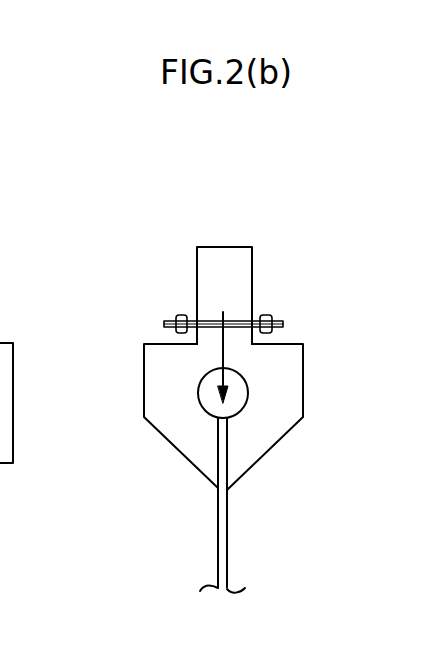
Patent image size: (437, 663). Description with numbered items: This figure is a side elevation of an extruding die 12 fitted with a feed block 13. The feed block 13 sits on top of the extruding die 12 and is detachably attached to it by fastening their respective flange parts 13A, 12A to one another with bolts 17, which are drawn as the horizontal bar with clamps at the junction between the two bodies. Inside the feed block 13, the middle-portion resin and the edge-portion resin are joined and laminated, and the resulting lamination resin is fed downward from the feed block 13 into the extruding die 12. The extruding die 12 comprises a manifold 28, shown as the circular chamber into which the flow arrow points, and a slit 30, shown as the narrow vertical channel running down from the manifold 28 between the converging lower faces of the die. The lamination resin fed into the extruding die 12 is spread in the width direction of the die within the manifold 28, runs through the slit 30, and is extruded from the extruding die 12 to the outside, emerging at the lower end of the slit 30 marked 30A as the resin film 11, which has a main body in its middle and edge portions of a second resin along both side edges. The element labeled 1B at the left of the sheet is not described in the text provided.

The feed block 13 is at (254, 267).
The extruding die 12 is at (306, 358).
The manifold 28 is at (237, 392).
The slit 30 is at (226, 462).
The channel lower portion 30A is at (226, 505).
The resin film 11 is at (226, 552).
The bolts 17 is at (272, 320).
The flange part 13A is at (196, 317).
The flange part 12A is at (196, 341).
The adjacent unit 1B is at (21, 453).